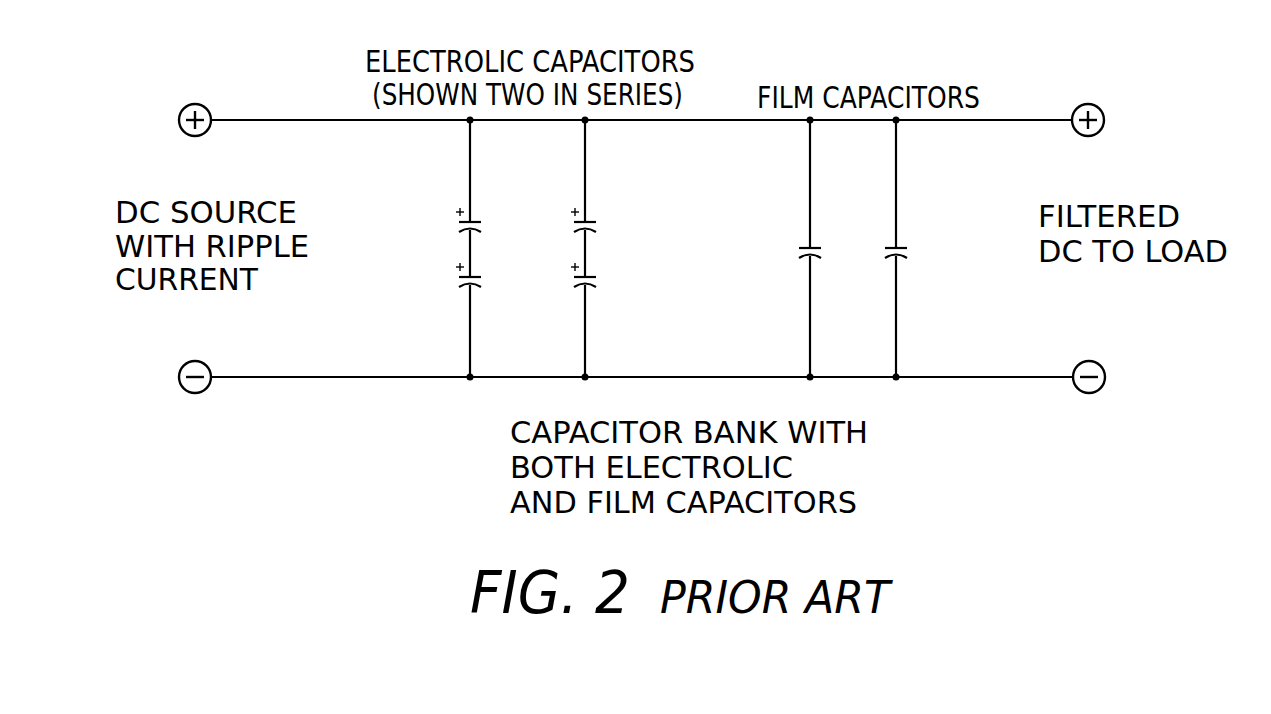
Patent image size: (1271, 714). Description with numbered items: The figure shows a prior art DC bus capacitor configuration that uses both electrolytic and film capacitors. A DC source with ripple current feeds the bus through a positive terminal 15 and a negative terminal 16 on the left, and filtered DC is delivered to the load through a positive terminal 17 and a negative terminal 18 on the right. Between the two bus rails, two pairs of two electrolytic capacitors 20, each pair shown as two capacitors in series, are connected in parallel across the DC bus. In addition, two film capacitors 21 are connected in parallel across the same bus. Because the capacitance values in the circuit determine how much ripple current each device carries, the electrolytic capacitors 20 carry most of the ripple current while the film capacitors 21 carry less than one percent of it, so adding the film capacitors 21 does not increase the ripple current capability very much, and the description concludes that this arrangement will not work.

The positive DC source terminal 15 is at (184, 110).
The negative DC source terminal 16 is at (212, 371).
The positive load output terminal 17 is at (1104, 110).
The negative load output terminal 18 is at (1105, 369).
The electrolytic capacitor 20 is at (481, 222).
The film capacitor 21 is at (821, 248).